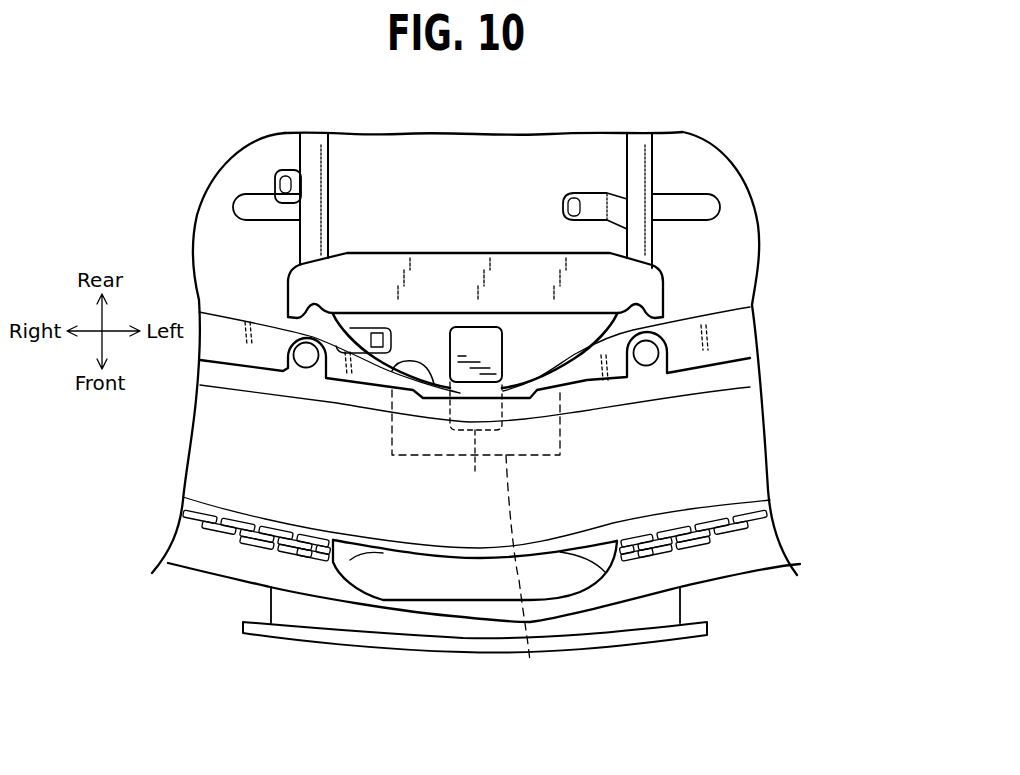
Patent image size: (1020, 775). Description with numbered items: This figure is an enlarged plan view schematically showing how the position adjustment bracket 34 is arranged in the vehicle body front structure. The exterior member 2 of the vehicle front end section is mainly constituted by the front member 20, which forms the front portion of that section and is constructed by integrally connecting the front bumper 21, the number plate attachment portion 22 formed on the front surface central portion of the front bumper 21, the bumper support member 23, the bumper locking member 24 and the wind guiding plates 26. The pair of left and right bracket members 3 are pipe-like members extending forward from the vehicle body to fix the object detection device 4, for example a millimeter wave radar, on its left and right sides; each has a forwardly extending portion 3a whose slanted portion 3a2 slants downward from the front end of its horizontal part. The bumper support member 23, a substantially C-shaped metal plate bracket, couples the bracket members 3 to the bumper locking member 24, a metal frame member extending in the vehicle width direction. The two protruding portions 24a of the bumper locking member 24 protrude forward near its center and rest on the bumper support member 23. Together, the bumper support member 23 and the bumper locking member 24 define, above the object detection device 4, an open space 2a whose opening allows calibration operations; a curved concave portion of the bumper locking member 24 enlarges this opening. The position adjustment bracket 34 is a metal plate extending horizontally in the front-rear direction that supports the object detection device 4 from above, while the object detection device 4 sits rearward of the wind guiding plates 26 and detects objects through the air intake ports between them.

The exterior member 2 is at (753, 600).
The open space 2a is at (428, 352).
The bracket member 3 is at (314, 178).
The forwardly extending portion 3a is at (647, 243).
The slanted portion 3a2 is at (647, 243).
The object detection device 4 is at (519, 576).
The front member 20 is at (753, 600).
The front bumper 21 is at (620, 580).
The number plate attachment portion 22 is at (338, 650).
The bumper support member 23 is at (515, 268).
The bumper locking member 24 is at (723, 342).
The protruding portion 24a is at (400, 362).
The wind guiding plate 26 is at (230, 542).
The position adjustment bracket 34 is at (481, 348).